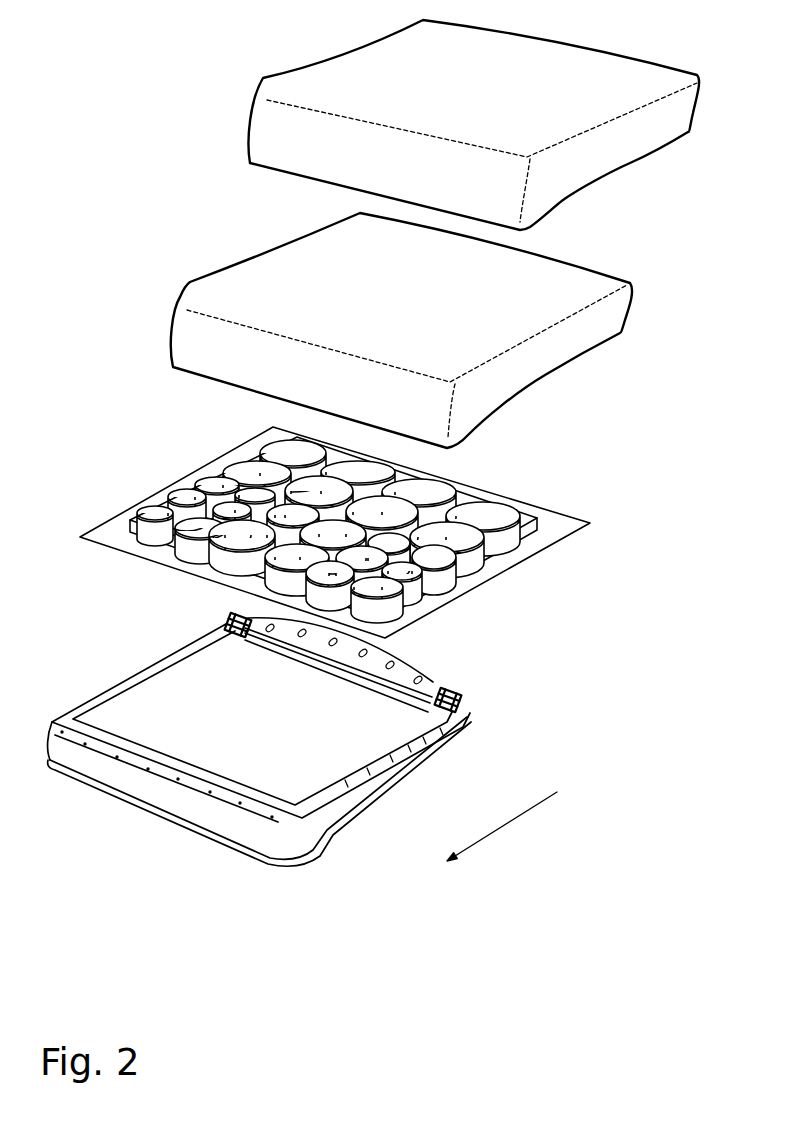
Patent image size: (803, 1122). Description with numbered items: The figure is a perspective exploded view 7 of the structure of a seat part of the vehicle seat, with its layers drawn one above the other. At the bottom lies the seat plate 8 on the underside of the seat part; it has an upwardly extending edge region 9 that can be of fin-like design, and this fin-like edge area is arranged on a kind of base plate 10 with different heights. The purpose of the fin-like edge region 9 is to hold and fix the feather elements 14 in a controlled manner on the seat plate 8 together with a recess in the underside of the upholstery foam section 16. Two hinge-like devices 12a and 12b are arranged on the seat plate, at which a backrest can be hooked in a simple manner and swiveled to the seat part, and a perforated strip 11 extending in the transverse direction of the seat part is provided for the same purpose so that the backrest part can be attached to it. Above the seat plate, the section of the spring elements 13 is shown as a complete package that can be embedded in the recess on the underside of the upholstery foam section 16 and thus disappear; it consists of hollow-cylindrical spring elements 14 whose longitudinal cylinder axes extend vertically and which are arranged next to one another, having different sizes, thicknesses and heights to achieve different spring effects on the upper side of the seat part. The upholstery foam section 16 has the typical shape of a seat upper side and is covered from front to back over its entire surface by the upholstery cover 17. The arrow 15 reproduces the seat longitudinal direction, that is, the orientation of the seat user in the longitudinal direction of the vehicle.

The exploded view 7 is at (309, 899).
The seat plate 8 is at (322, 775).
The edge region 9 is at (192, 770).
The base plate 10 is at (259, 762).
The perforated strip 11 is at (420, 650).
The hinge-like device 12a is at (226, 616).
The hinge-like device 12b is at (463, 684).
The section of the spring elements 13 is at (389, 532).
The feather elements 14 is at (523, 535).
The arrow 15 is at (517, 820).
The upholstery foam section 16 is at (552, 357).
The upholstery cover 17 is at (630, 140).